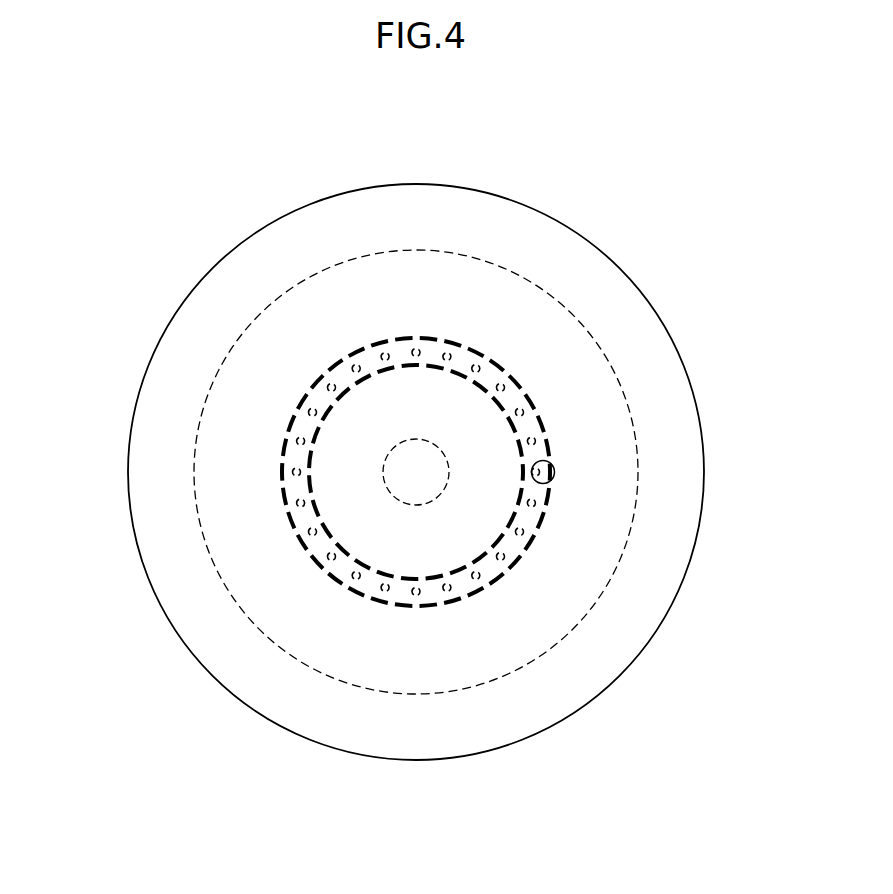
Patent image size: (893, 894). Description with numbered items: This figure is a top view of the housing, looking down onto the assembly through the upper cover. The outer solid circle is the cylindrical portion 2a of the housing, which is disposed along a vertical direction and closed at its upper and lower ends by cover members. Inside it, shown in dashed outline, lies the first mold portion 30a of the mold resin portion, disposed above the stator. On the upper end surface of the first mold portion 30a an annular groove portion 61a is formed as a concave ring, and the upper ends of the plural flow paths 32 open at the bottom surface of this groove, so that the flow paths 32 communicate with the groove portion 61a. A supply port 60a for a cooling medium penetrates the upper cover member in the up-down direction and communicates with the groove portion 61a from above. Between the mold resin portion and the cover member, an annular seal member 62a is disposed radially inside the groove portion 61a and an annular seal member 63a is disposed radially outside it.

The cylindrical portion 2a is at (143, 455).
The first mold portion 30a is at (250, 365).
The flow path 32 is at (310, 532).
The supply port 60a is at (549, 461).
The annular groove portion 61a is at (342, 588).
The annular seal member 62a is at (305, 552).
The annular seal member 63a is at (315, 570).